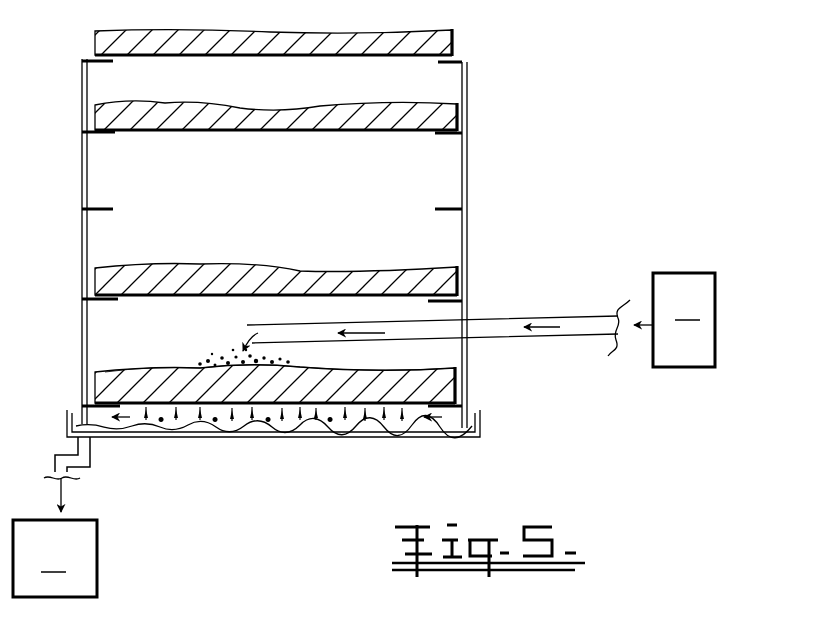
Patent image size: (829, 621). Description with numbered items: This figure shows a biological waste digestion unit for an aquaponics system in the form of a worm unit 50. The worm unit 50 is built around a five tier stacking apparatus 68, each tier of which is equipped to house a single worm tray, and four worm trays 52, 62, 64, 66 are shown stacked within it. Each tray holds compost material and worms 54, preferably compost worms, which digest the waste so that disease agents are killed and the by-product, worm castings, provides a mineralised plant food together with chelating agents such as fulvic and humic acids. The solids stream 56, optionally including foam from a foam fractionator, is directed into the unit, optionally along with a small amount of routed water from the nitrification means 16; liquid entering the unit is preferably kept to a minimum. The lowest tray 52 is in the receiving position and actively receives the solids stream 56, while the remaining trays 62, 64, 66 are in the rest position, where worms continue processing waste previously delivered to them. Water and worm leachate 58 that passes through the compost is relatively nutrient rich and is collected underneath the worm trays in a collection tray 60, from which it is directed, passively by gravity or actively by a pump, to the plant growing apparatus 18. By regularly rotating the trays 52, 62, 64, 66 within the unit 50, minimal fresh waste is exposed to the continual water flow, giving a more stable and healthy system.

The nitrification means 16 is at (481, 320).
The plant growing apparatus 18 is at (55, 517).
The worm unit 50 is at (586, 145).
The tray 52 is at (456, 391).
The compost material and worms 54 is at (110, 383).
The solids stream 56 is at (217, 358).
The water and worm leachate 58 is at (316, 430).
The collection tray 60 is at (401, 438).
The worm tray 62 is at (467, 268).
The worm tray 64 is at (468, 105).
The worm tray 66 is at (458, 45).
The five tier stacking apparatus 68 is at (467, 182).